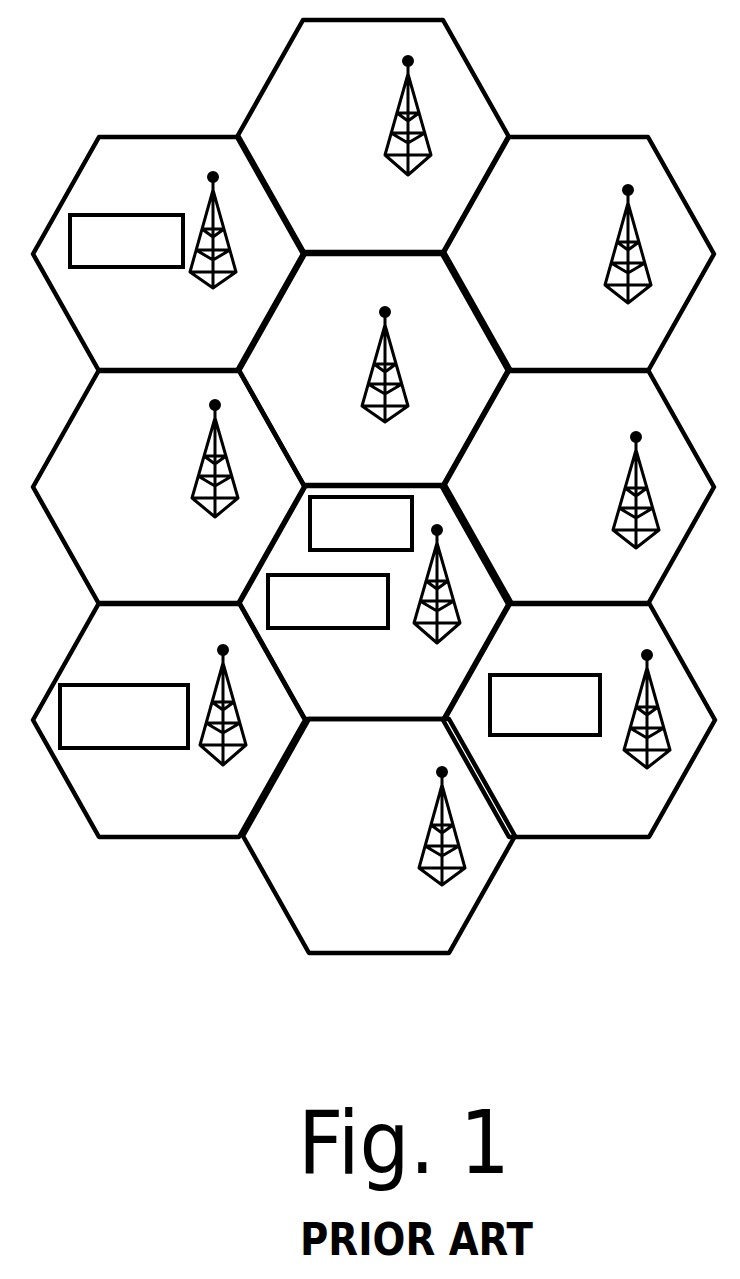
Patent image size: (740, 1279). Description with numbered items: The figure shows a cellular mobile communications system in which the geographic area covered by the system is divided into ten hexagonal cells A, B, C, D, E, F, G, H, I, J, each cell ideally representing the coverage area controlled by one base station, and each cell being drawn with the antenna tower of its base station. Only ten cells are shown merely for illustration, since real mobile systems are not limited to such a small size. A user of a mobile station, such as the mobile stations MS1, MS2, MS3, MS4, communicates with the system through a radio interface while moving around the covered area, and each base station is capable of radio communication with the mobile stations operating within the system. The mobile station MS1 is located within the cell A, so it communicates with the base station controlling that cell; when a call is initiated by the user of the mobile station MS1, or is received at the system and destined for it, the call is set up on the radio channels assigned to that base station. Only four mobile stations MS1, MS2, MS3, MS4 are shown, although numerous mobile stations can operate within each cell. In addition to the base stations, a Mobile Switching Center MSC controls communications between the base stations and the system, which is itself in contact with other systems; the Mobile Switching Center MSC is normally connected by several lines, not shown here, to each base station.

The cell A is at (374, 369).
The cell B is at (169, 254).
The cell C is at (373, 137).
The cell D is at (578, 254).
The cell E is at (578, 487).
The cell F is at (375, 602).
The cell G is at (169, 487).
The cell H is at (579, 720).
The cell I is at (379, 836).
The cell J is at (169, 720).
The mobile station MS1 is at (361, 524).
The mobile station MS2 is at (328, 602).
The mobile station MS3 is at (545, 705).
The mobile station MS4 is at (126, 241).
The Mobile Switching Center MSC is at (124, 716).